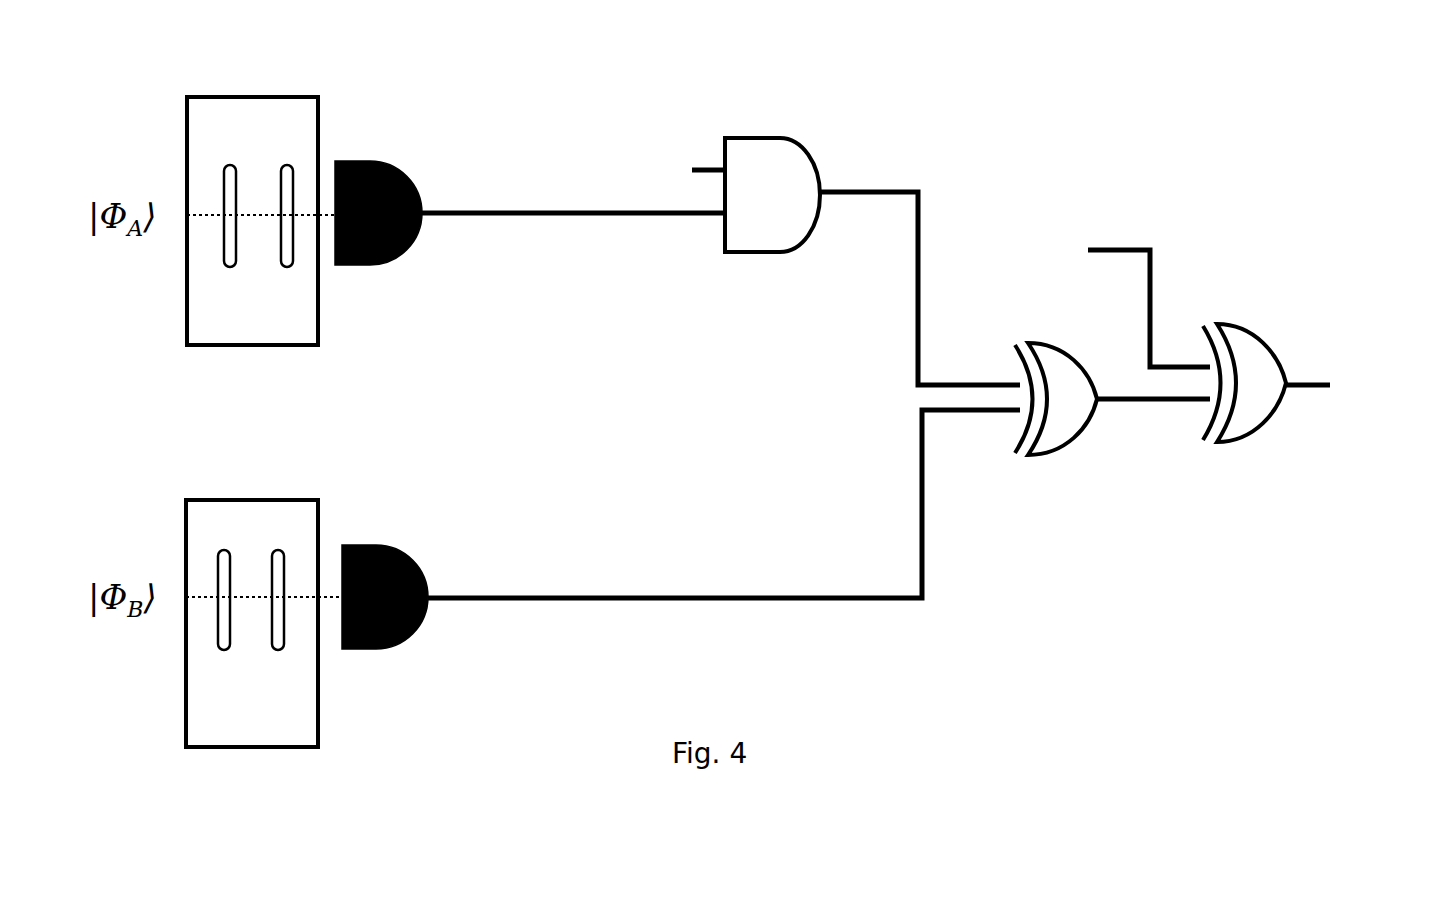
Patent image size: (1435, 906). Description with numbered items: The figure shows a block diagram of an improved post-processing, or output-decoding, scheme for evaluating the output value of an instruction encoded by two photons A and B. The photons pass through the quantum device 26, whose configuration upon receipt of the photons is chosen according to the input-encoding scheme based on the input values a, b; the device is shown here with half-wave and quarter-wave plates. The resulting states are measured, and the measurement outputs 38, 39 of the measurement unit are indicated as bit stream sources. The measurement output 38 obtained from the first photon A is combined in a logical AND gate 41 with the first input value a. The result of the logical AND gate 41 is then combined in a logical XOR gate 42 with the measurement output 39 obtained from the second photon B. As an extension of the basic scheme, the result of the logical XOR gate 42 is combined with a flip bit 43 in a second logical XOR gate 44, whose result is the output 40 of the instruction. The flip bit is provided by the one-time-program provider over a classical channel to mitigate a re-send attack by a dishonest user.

The quantum device 26 is at (250, 345).
The measurement output 38 is at (400, 177).
The measurement output 39 is at (398, 552).
The output 40 is at (1385, 353).
The logical AND gate 41 is at (797, 138).
The logical XOR gate 42 is at (1067, 345).
The flip bit 43 is at (1135, 245).
The second logical XOR gate 44 is at (1250, 323).